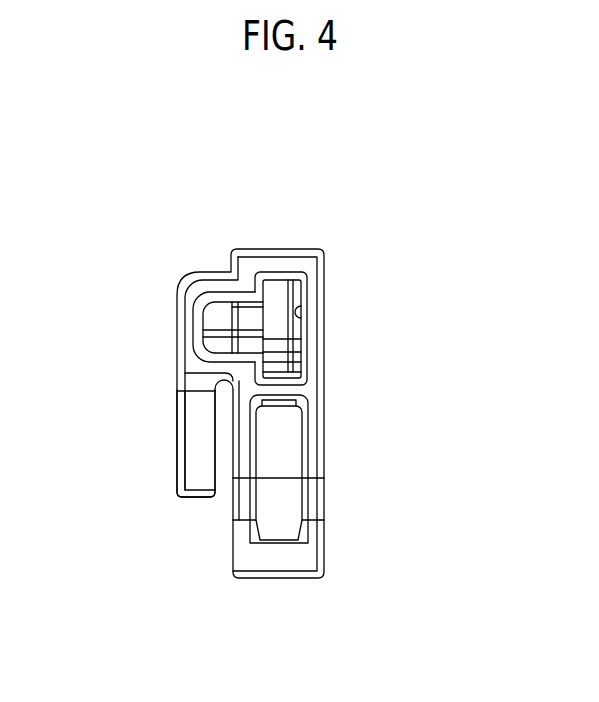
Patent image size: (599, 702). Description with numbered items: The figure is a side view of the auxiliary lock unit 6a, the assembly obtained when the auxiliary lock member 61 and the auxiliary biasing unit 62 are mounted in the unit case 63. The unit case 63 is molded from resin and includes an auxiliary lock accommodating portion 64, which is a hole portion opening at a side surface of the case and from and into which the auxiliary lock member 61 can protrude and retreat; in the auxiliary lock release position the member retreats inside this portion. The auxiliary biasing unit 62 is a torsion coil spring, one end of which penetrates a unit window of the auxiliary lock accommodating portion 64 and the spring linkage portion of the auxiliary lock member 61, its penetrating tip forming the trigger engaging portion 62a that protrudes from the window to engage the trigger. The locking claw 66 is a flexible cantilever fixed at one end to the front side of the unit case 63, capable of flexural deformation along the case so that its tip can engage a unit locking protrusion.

The auxiliary lock unit 6a is at (230, 338).
The auxiliary lock member 61 is at (275, 298).
The auxiliary biasing unit 62 is at (215, 332).
The trigger engaging portion 62a is at (215, 332).
The unit case 63 is at (313, 440).
The auxiliary lock accommodating portion 64 is at (293, 313).
The locking claw 66 is at (192, 422).